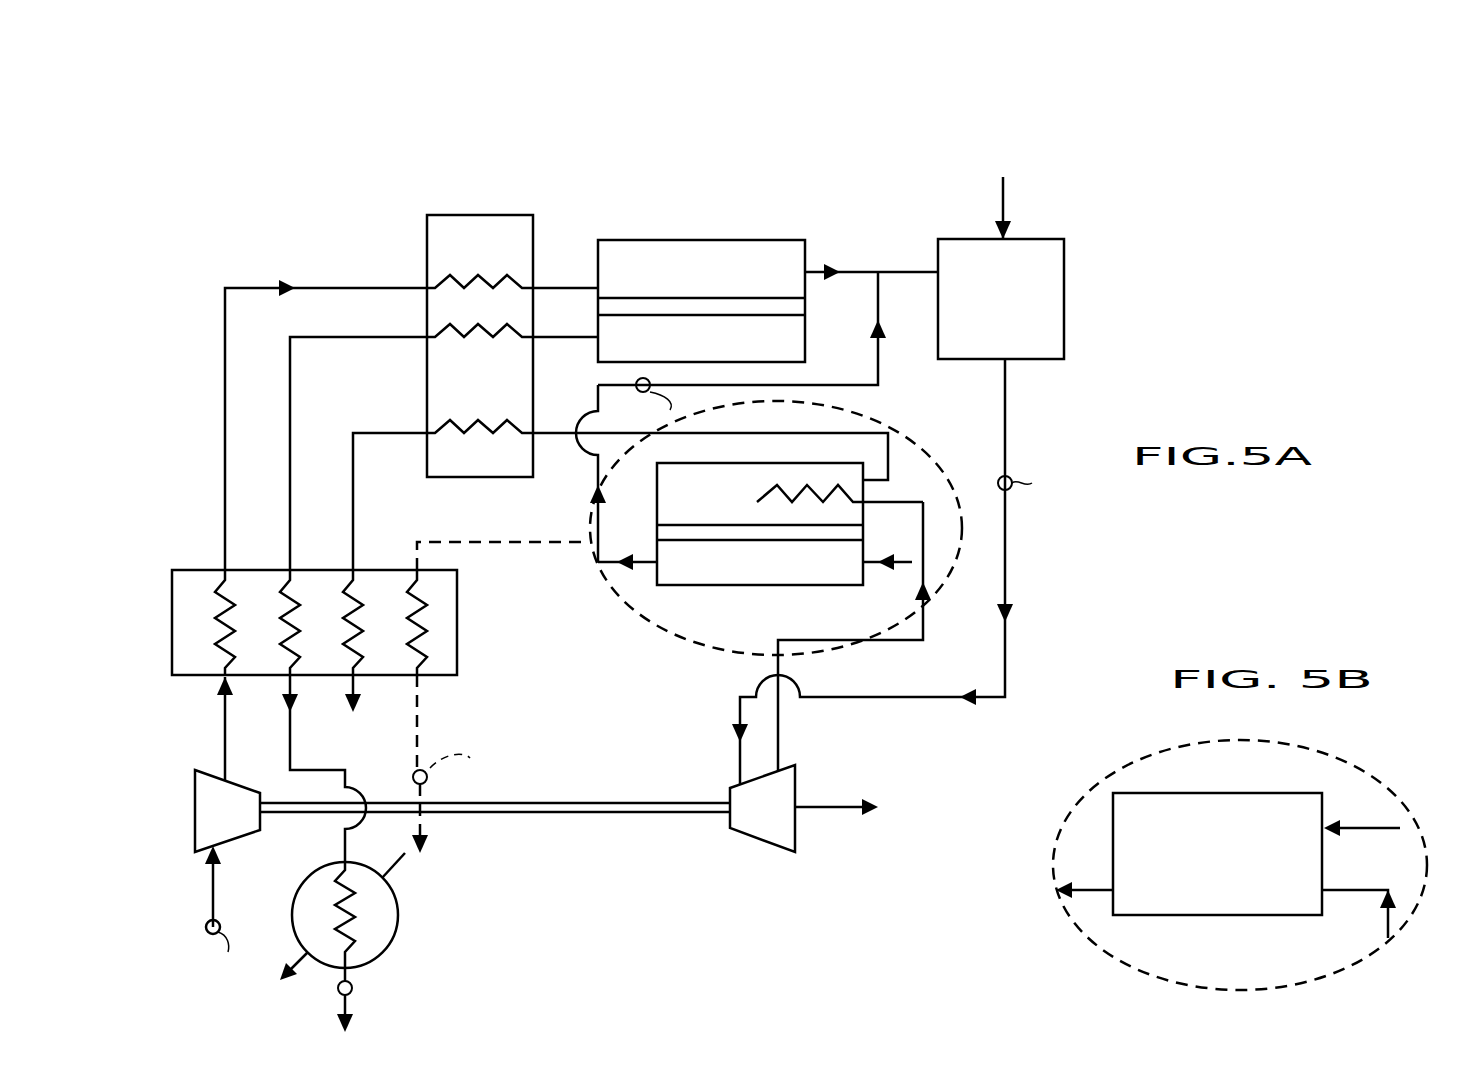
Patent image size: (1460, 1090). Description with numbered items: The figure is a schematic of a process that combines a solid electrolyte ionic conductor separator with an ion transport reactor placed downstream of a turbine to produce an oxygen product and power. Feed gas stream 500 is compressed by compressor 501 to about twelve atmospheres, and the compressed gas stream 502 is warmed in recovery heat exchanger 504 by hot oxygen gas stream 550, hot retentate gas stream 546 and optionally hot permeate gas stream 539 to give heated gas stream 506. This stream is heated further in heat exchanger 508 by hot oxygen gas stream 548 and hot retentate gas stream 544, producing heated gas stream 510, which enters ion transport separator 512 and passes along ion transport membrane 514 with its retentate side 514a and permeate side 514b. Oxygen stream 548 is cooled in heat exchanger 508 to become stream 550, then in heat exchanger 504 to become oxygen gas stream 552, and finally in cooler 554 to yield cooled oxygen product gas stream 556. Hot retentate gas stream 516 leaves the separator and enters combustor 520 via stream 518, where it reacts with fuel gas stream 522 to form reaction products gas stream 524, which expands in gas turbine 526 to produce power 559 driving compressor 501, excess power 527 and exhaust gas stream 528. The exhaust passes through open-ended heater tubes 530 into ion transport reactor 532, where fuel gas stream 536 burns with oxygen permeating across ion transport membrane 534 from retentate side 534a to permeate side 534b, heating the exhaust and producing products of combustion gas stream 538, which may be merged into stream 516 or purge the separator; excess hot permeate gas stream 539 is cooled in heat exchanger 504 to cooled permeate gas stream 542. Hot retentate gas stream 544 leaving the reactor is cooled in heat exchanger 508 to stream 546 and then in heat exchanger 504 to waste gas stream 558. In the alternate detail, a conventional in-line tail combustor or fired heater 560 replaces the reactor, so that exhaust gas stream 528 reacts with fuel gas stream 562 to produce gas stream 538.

In FIG. 5A, the feed gas stream 500 is at (210, 900).
In FIG. 5A, the compressor 501 is at (193, 818).
In FIG. 5A, the compressed gas stream 502 is at (225, 722).
In FIG. 5A, the recovery heat exchanger 504 is at (457, 608).
In FIG. 5A, the heated gas stream 506 is at (223, 415).
In FIG. 5A, the heat exchanger 508 is at (498, 215).
In FIG. 5A, the heated gas stream 510 is at (562, 287).
In FIG. 5A, the ion transport separator 512 is at (712, 240).
In FIG. 5A, the ion transport membrane 514 is at (805, 307).
In FIG. 5A, the retentate side 514a is at (690, 298).
In FIG. 5A, the permeate side 514b is at (752, 315).
In FIG. 5A, the hot retentate gas stream 516 is at (878, 272).
In FIG. 5A, the stream 518 is at (905, 278).
In FIG. 5A, the combustor 520 is at (1064, 280).
In FIG. 5A, the fuel gas stream 522 is at (1003, 195).
In FIG. 5A, the reaction products gas stream 524 is at (1005, 390).
In FIG. 5A, the gas turbine 526 is at (795, 781).
In FIG. 5A, the excess power 527 is at (830, 810).
In FIG. 5A, the exhaust gas stream 528 is at (840, 610).
In FIG. 5B, the exhaust gas stream 528 is at (1395, 928).
In FIG. 5A, the open-ended heater tubes 530 is at (782, 485).
In FIG. 5A, the ion transport reactor 532 is at (757, 585).
In FIG. 5A, the ion transport membrane 534 is at (657, 530).
In FIG. 5A, the retentate side 534a is at (737, 525).
In FIG. 5A, the permeate side 534b is at (782, 540).
In FIG. 5A, the fuel gas stream 536 is at (903, 562).
In FIG. 5A, the products of combustion gas stream 538 is at (600, 565).
In FIG. 5B, the products of combustion gas stream 538 is at (1098, 887).
In FIG. 5A, the hot permeate gas stream 539 is at (463, 542).
In FIG. 5A, the cooled permeate gas stream 542 is at (432, 755).
In FIG. 5A, the hot retentate gas stream 544 is at (890, 458).
In FIG. 5A, the hot retentate gas stream 546 is at (397, 433).
In FIG. 5A, the hot oxygen gas stream 548 is at (553, 340).
In FIG. 5A, the hot oxygen gas stream 550 is at (290, 393).
In FIG. 5A, the oxygen gas stream 552 is at (325, 713).
In FIG. 5A, the cooler 554 is at (395, 918).
In FIG. 5A, the cooled oxygen product gas stream 556 is at (350, 980).
In FIG. 5A, the waste gas stream 558 is at (353, 685).
In FIG. 5A, the power 559 is at (683, 815).
In FIG. 5B, the in-line tail combustor or fired heater 560 is at (1202, 793).
In FIG. 5B, the fuel gas stream 562 is at (1405, 858).